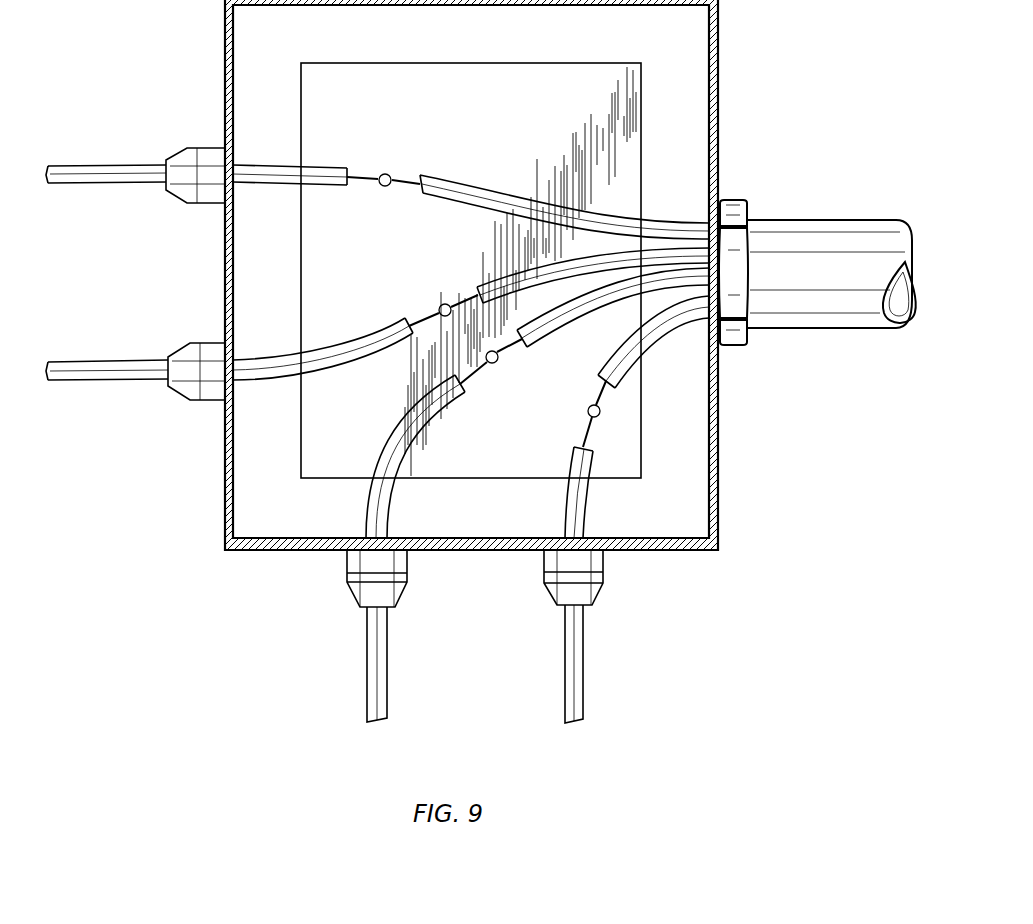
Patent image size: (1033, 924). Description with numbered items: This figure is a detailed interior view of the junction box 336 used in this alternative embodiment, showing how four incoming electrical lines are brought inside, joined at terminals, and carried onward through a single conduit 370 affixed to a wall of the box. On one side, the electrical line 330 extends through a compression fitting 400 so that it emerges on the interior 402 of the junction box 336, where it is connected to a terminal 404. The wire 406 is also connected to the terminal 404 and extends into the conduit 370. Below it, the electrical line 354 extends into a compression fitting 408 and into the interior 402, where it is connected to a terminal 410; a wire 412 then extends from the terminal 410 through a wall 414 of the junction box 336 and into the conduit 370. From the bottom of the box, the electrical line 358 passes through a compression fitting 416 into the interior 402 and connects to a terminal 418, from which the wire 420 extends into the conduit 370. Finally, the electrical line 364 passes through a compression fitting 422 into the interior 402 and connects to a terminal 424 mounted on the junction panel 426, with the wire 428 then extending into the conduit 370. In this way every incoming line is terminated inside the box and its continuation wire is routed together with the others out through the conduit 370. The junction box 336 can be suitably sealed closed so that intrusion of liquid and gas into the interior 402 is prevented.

The junction box 336 is at (718, 72).
The wall 414 is at (718, 428).
The interior 402 is at (488, 142).
The electrical line 330 is at (150, 182).
The compression fitting 400 is at (194, 148).
The terminal 404 is at (381, 186).
The wire 406 is at (640, 205).
The electrical line 354 is at (136, 383).
The compression fitting 408 is at (190, 343).
The terminal 410 is at (439, 305).
The wire 412 is at (513, 272).
The junction panel 426 is at (348, 472).
The terminal 418 is at (484, 358).
The wire 420 is at (600, 310).
The wire 428 is at (650, 345).
The terminal 424 is at (588, 413).
The compression fitting 416 is at (352, 592).
The electrical line 358 is at (368, 658).
The compression fitting 422 is at (604, 580).
The electrical line 364 is at (586, 660).
The conduit 370 is at (792, 222).